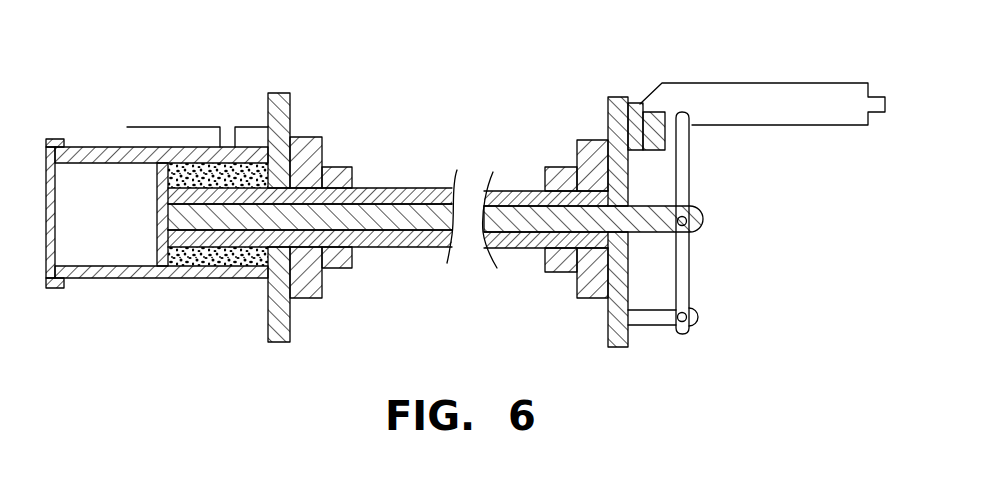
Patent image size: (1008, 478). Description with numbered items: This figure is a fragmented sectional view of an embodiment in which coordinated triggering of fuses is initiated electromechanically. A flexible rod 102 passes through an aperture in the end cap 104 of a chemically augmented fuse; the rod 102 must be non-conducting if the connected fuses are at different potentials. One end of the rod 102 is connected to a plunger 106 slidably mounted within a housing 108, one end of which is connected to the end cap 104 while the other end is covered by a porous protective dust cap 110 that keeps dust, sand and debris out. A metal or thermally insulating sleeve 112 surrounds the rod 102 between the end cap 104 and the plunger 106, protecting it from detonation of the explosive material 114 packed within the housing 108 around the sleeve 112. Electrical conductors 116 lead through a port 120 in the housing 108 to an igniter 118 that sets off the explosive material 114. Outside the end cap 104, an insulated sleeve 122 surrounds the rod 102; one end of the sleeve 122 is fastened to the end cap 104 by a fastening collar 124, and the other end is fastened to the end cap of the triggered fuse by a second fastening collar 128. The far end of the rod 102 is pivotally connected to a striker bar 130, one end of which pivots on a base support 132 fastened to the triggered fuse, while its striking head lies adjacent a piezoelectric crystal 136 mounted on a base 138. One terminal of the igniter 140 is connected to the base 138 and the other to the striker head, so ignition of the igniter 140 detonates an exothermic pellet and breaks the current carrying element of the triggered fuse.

The flexible rod 102 is at (420, 213).
The end cap 104 is at (287, 94).
The plunger 106 is at (163, 160).
The housing 108 is at (92, 148).
The protective dust cap 110 is at (52, 140).
The sleeve 112 is at (213, 242).
The explosive material 114 is at (255, 258).
The electrical conductors 116 is at (183, 127).
The igniter 118 is at (160, 252).
The port 120 is at (222, 190).
The insulated sleeve 122 is at (380, 188).
The fastening collar 124 is at (325, 168).
The second fastening collar 128 is at (585, 290).
The striker bar 130 is at (690, 166).
The base support 132 is at (650, 320).
The piezoelectric crystal 136 is at (665, 110).
The base 138 is at (642, 103).
The igniter 140 is at (882, 97).